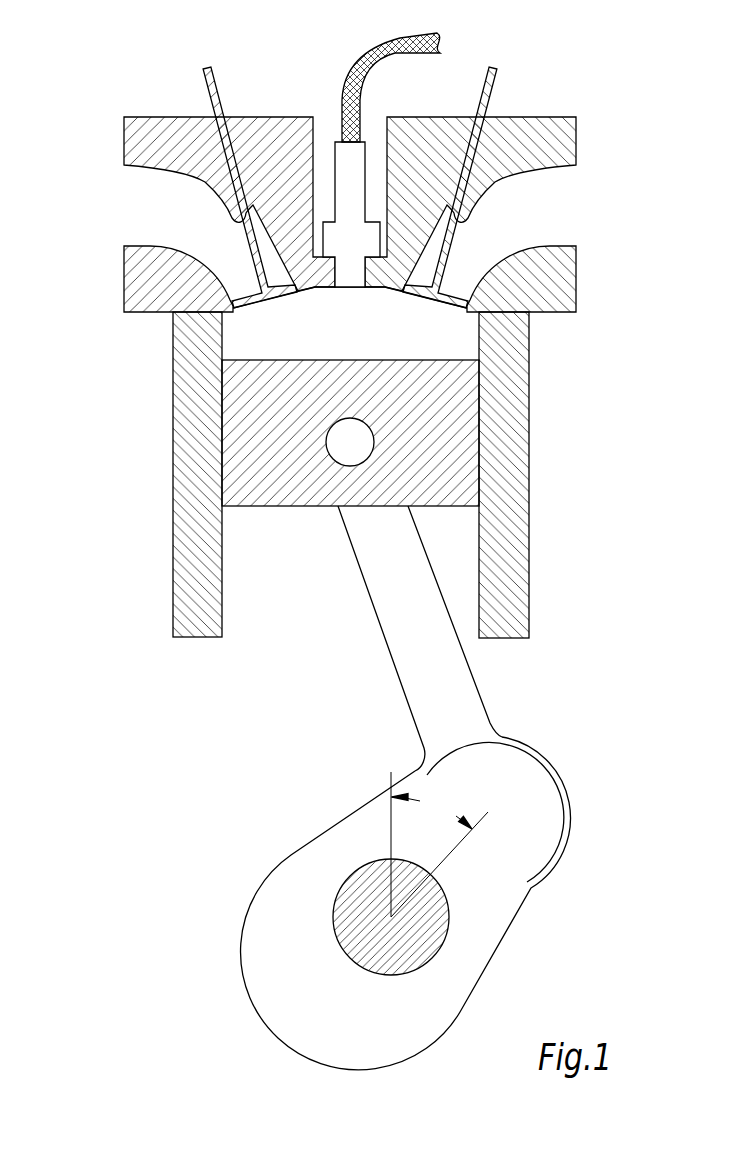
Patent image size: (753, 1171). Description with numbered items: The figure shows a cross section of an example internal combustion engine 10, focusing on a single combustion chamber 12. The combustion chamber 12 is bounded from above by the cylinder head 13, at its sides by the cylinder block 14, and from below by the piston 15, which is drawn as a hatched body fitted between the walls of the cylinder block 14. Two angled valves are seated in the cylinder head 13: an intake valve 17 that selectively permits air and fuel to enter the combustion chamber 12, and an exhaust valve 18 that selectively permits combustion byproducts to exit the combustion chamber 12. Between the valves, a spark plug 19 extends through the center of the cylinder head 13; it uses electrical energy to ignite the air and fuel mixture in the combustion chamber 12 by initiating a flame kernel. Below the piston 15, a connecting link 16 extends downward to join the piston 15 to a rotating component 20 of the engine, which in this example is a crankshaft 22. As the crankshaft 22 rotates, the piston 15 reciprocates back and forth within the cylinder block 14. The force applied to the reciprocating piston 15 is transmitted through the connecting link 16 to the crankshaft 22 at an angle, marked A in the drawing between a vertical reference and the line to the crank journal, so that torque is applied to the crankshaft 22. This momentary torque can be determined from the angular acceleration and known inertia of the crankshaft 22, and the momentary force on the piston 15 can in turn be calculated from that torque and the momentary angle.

The internal combustion engine 10 is at (100, 16).
The combustion chamber 12 is at (290, 340).
The cylinder head 13 is at (260, 123).
The cylinder block 14 is at (192, 433).
The piston 15 is at (293, 497).
The connecting link 16 is at (395, 620).
The intake valve 17 is at (450, 241).
The exhaust valve 18 is at (250, 241).
The spark plug 19 is at (345, 175).
The rotating component 20 is at (493, 928).
The crankshaft 22 is at (467, 983).